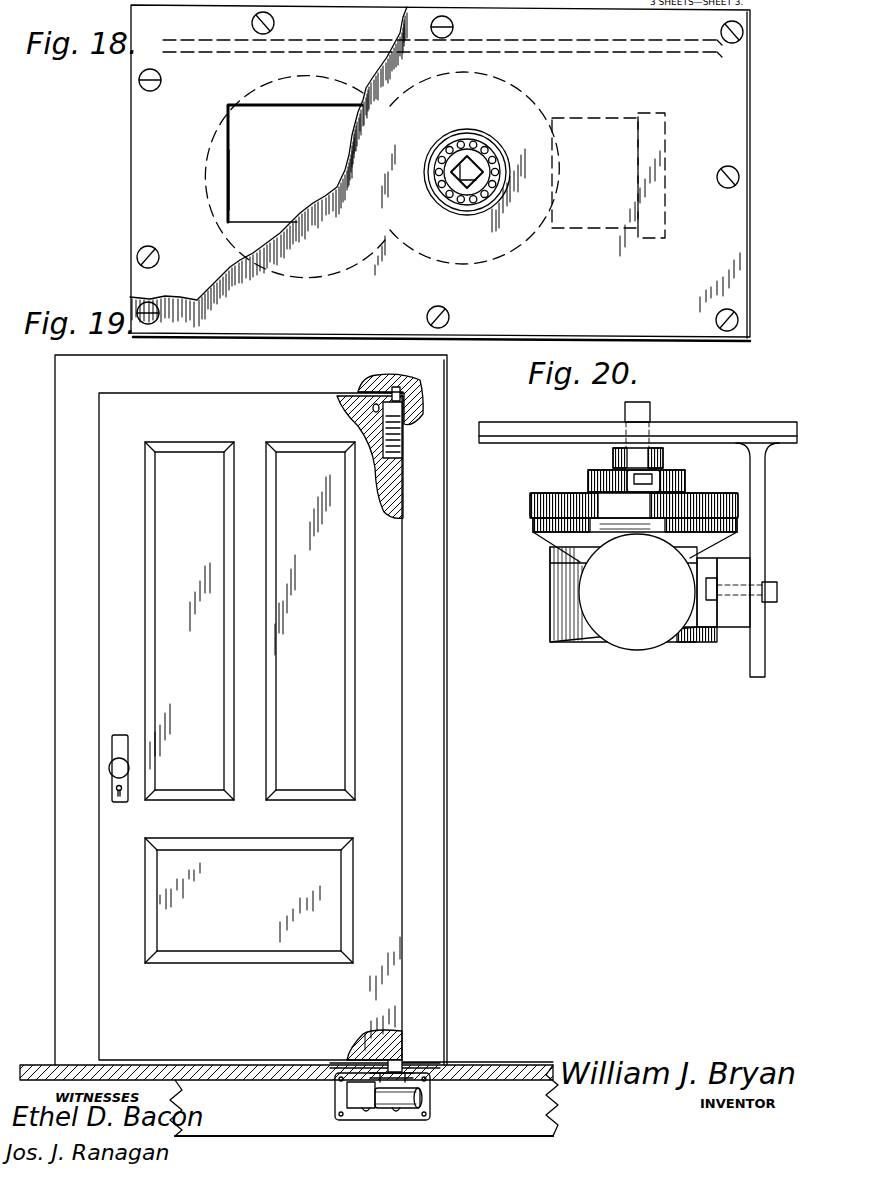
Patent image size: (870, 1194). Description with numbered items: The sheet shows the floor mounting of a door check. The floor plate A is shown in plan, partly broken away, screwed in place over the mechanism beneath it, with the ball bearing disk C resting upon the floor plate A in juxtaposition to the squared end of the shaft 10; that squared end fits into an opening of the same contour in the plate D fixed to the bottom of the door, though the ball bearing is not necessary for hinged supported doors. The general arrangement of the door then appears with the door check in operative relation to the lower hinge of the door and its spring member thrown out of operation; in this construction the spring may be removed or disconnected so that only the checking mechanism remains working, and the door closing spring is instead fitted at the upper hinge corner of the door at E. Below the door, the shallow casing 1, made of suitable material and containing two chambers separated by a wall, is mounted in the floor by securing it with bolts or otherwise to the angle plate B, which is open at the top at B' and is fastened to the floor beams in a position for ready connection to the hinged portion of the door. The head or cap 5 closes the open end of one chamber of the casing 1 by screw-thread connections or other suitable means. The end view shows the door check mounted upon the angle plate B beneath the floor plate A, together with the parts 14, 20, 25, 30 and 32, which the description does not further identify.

In FIG. 18, the floor plate A is at (440, 173).
In FIG. 20, the floor plate A is at (730, 423).
In FIG. 18, the angle plate B is at (257, 163).
In FIG. 19, the angle plate B is at (401, 1096).
In FIG. 20, the angle plate B is at (765, 560).
In FIG. 18, the open top of angle plate B' is at (199, 188).
In FIG. 18, the ball bearing disk C is at (483, 202).
In FIG. 19, the ball bearing disk C is at (403, 1065).
In FIG. 19, the plate fixed to the bottom of the door D is at (392, 1058).
In FIG. 19, the upper hinge corner of the door E is at (404, 432).
In FIG. 19, the casing 1 is at (383, 1110).
In FIG. 20, the casing 1 is at (577, 627).
In FIG. 20, the head or cap 5 is at (610, 594).
In FIG. 18, the shaft 10 is at (436, 200).
In FIG. 19, the shaft 10 is at (396, 1064).
In FIG. 20, the pin 14 is at (652, 411).
In FIG. 20, the gear wheel 20 is at (548, 510).
In FIG. 20, the collar 25 is at (684, 483).
In FIG. 20, the hub 30 is at (630, 457).
In FIG. 20, the ratchet wheel 32 is at (640, 477).